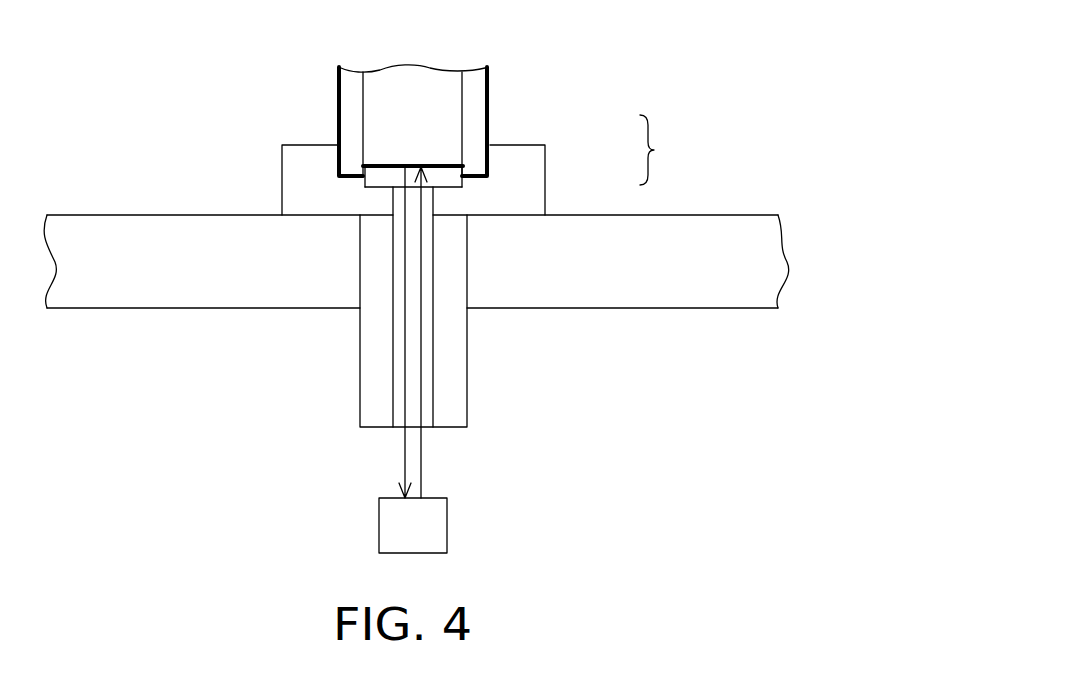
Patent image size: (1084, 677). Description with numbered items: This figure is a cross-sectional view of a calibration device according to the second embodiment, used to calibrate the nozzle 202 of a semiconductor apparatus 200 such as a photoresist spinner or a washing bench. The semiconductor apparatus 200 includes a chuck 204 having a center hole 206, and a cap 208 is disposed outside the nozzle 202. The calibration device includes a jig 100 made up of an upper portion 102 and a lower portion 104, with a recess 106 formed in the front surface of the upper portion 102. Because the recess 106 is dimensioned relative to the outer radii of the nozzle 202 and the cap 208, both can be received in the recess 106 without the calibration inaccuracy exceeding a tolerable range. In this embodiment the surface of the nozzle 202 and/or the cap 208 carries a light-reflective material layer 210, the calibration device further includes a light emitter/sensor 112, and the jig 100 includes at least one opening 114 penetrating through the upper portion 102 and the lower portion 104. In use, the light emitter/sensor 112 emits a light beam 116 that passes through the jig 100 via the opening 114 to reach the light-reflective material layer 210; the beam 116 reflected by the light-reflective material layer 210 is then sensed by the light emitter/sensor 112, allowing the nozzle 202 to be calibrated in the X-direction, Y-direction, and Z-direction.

The jig 100 is at (667, 150).
The upper portion 102 is at (522, 173).
The lower portion 104 is at (440, 252).
The recess 106 is at (490, 160).
The light emitter/sensor 112 is at (436, 530).
The opening 114 is at (397, 358).
The light beam 116 is at (403, 462).
The semiconductor apparatus 200 is at (741, 587).
The nozzle 202 is at (437, 120).
The chuck 204 is at (725, 228).
The center hole 206 is at (470, 283).
The cap 208 is at (472, 75).
The light-reflective material layer 210 is at (337, 97).